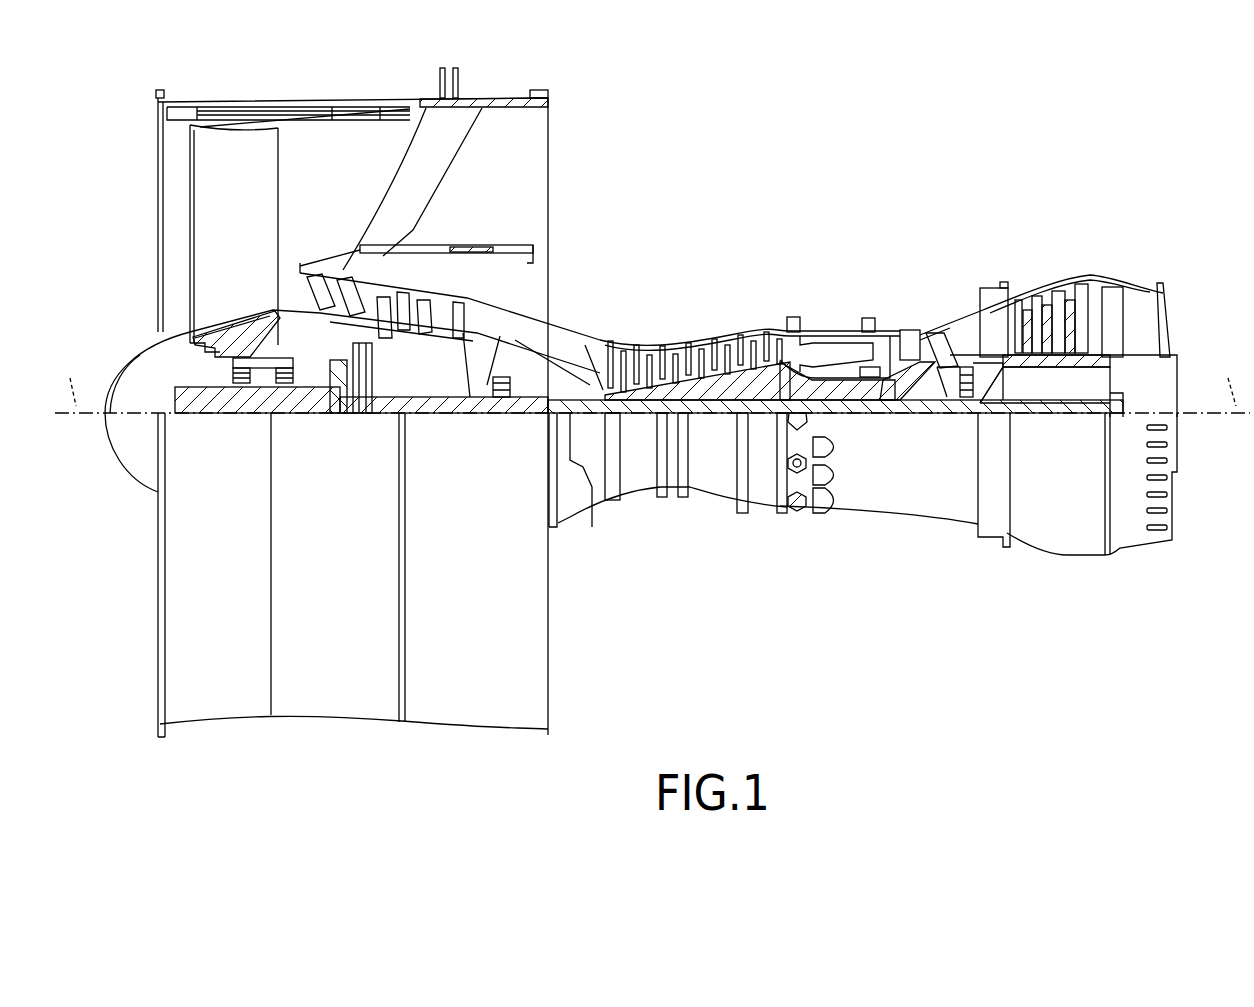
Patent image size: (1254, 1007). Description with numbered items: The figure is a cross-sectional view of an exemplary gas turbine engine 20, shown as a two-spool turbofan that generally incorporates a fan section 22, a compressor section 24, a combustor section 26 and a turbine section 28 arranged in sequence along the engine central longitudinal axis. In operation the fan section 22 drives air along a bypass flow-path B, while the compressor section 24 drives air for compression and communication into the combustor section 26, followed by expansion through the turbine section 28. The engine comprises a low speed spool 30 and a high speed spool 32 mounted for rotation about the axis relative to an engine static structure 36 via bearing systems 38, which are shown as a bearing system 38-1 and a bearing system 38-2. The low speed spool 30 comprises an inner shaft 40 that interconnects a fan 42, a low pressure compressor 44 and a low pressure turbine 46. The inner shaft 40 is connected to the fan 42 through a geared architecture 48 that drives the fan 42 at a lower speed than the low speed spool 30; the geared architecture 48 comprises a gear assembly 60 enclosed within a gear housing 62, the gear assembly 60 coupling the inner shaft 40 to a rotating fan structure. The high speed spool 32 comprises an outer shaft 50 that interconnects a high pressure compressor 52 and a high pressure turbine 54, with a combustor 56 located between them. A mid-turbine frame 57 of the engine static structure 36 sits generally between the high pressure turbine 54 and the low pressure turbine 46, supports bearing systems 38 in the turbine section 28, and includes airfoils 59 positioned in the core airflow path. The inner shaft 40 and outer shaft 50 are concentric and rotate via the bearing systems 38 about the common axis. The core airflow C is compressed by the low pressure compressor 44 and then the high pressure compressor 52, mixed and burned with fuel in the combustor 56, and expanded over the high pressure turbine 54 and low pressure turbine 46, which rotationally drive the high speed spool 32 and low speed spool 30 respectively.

The gas turbine engine 20 is at (896, 135).
The fan section 22 is at (400, 77).
The compressor section 24 is at (405, 210).
The combustor section 26 is at (893, 210).
The turbine section 28 is at (1110, 210).
The low speed spool 30 is at (720, 452).
The high speed spool 32 is at (760, 377).
The engine static structure 36 is at (146, 728).
The bearing system 38 is at (947, 413).
The bearing system 38-1 is at (250, 403).
The bearing system 38-2 is at (497, 415).
The inner shaft 40 is at (575, 484).
The fan 42 is at (212, 420).
The low pressure compressor section 44 is at (480, 310).
The low pressure turbine section 46 is at (1040, 297).
The geared architecture 48 is at (366, 442).
The outer shaft 50 is at (838, 400).
The high pressure compressor 52 is at (713, 343).
The high pressure turbine section 54 is at (912, 328).
The combustor 56 is at (847, 353).
The mid-turbine frame 57 is at (953, 327).
The airfoils 59 is at (960, 338).
The gear assembly 60 is at (410, 416).
The gear housing 62 is at (365, 352).
The bypass flow-path B is at (345, 183).
The core airflow C is at (286, 284).